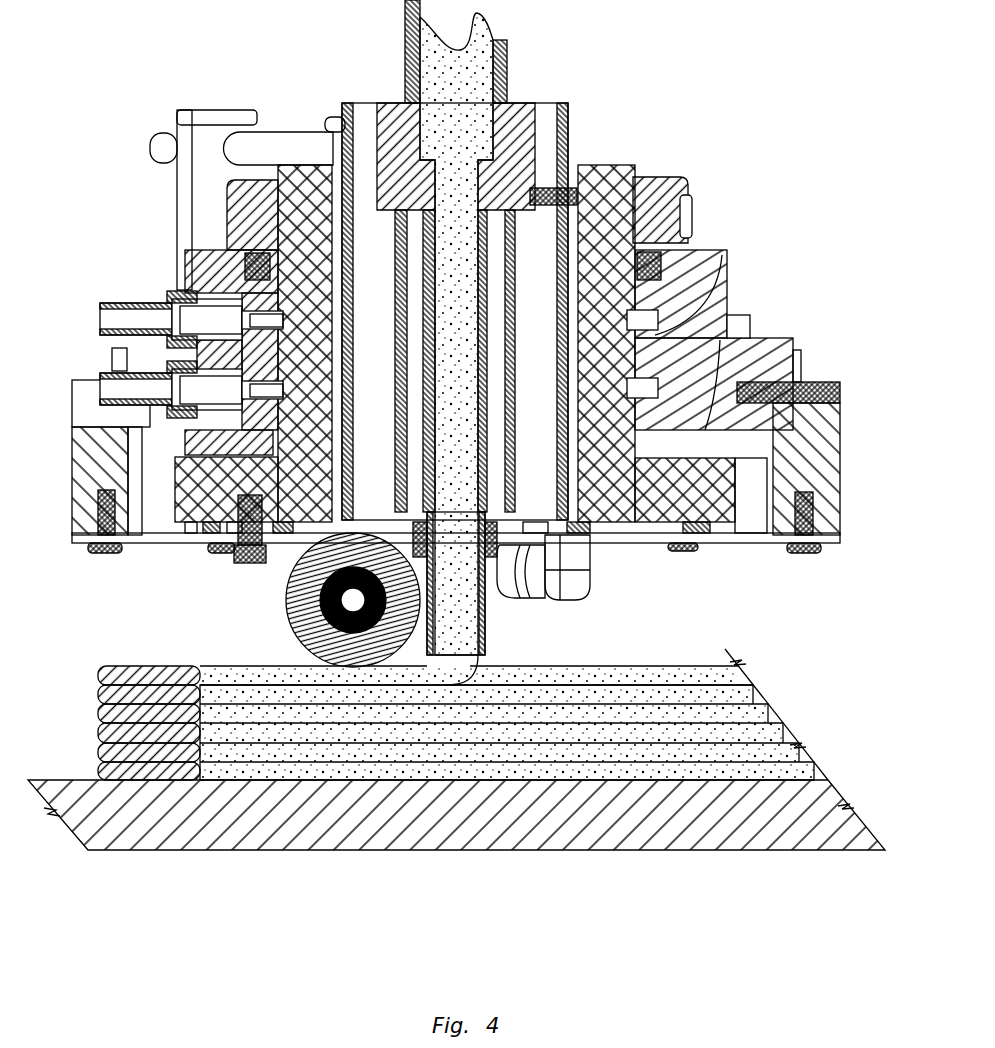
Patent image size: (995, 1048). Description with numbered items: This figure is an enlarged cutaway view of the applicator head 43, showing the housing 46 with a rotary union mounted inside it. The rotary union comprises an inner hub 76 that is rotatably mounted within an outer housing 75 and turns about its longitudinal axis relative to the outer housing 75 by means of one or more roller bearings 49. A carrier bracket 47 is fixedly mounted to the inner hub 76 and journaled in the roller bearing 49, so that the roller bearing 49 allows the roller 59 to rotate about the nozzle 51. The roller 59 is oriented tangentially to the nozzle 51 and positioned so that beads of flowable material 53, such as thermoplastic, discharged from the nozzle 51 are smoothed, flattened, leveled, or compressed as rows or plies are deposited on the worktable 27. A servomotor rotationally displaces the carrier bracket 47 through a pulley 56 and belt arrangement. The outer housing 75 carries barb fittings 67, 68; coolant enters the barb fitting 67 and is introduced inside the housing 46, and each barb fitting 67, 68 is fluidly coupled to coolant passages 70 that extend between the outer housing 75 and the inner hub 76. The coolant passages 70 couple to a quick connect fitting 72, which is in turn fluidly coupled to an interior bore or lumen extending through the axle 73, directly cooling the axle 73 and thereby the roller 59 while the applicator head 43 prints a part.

The worktable 27 is at (594, 855).
The applicator head 43 is at (772, 200).
The housing 46 is at (841, 452).
The carrier bracket 47 is at (233, 553).
The roller bearing 49 is at (690, 243).
The nozzle 51 is at (487, 634).
The material 53 is at (470, 27).
The pulley 56 is at (740, 493).
The roller 59 is at (287, 606).
The barb fitting 67 is at (100, 383).
The barb fitting 68 is at (100, 320).
The coolant passage 70 is at (715, 287).
The quick connect fitting 72 is at (570, 598).
The axle 73 is at (287, 587).
The outer housing 75 is at (217, 250).
The inner hub 76 is at (598, 165).